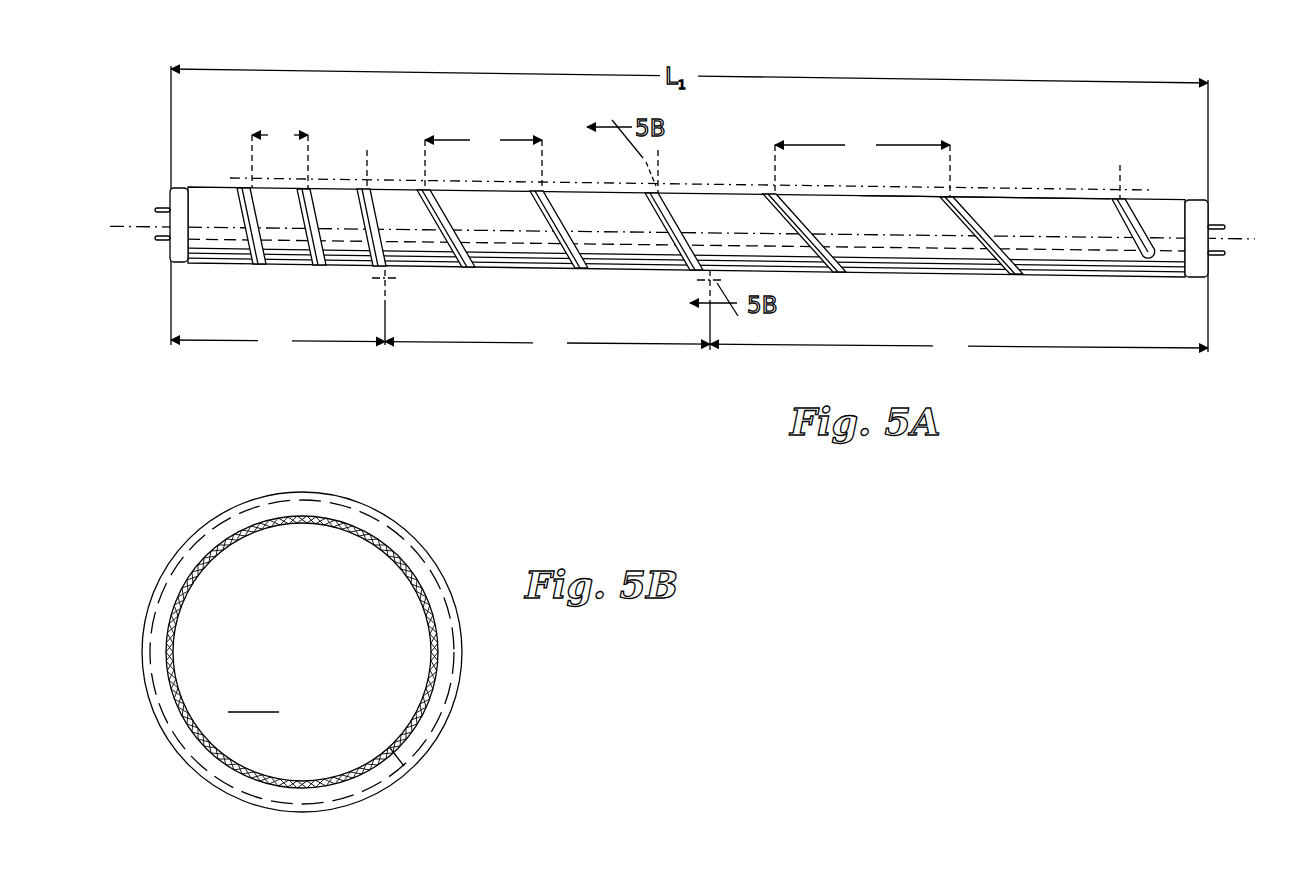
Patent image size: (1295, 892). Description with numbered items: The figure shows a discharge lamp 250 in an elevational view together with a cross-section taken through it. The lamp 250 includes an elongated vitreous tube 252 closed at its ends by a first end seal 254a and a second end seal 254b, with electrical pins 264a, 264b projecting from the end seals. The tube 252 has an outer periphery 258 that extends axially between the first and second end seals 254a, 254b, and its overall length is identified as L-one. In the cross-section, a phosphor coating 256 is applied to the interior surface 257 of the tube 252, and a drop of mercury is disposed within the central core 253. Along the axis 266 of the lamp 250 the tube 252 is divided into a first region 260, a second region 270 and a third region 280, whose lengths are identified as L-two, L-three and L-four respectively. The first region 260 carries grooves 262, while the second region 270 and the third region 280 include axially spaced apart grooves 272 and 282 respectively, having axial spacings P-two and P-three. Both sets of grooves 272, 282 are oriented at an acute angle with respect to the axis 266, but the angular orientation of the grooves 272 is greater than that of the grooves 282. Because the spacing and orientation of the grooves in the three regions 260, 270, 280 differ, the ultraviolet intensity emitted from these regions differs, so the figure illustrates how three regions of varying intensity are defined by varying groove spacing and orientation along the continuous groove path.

In FIG. 5A, the discharge lamp 250 is at (977, 66).
In FIG. 5B, the discharge lamp 250 is at (432, 536).
In FIG. 5A, the vitreous tube 252 is at (705, 192).
In FIG. 5B, the vitreous tube 252 is at (200, 773).
In FIG. 5B, the central core 253 is at (253, 698).
In FIG. 5A, the first end seal 254a is at (187, 188).
In FIG. 5A, the second end seal 254b is at (1200, 200).
In FIG. 5B, the phosphor coating 256 is at (213, 560).
In FIG. 5B, the interior surface 257 is at (402, 764).
In FIG. 5A, the outer periphery 258 is at (990, 197).
In FIG. 5B, the outer periphery 258 is at (452, 712).
In FIG. 5A, the first region 260 is at (212, 342).
In FIG. 5A, the grooves of first region 262 is at (270, 266).
In FIG. 5A, the first electrical pin 264a is at (160, 208).
In FIG. 5A, the second electrical pin 264b is at (162, 242).
In FIG. 5A, the axis 266 is at (1028, 238).
In FIG. 5A, the second region 270 is at (485, 345).
In FIG. 5A, the grooves 272 is at (477, 265).
In FIG. 5A, the third region 280 is at (1095, 350).
In FIG. 5A, the grooves 282 is at (858, 272).